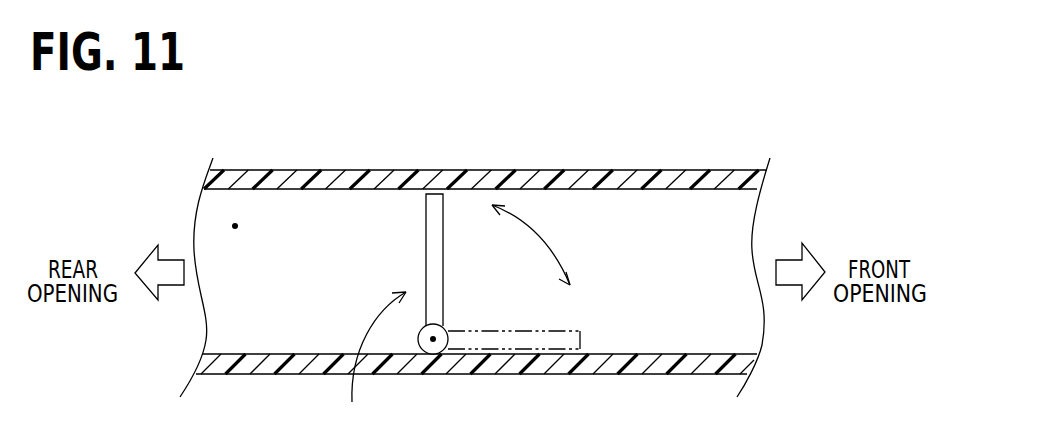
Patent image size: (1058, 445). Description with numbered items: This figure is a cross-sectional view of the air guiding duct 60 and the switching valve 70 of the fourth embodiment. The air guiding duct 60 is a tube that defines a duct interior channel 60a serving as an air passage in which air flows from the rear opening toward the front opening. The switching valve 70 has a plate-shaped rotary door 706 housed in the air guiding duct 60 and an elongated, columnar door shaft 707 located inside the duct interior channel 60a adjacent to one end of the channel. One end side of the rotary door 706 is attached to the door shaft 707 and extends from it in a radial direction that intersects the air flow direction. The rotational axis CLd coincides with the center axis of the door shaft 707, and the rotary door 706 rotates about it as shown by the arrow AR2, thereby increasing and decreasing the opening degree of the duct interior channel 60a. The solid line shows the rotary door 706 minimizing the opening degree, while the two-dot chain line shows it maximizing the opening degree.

The air guiding duct 60 is at (295, 178).
The duct interior channel 60a is at (235, 226).
The rotary door 706 is at (430, 235).
The door shaft 707 is at (425, 340).
The rotational axis CLd is at (436, 341).
The arrow AR2 is at (542, 237).
The switching valve 70 is at (369, 361).